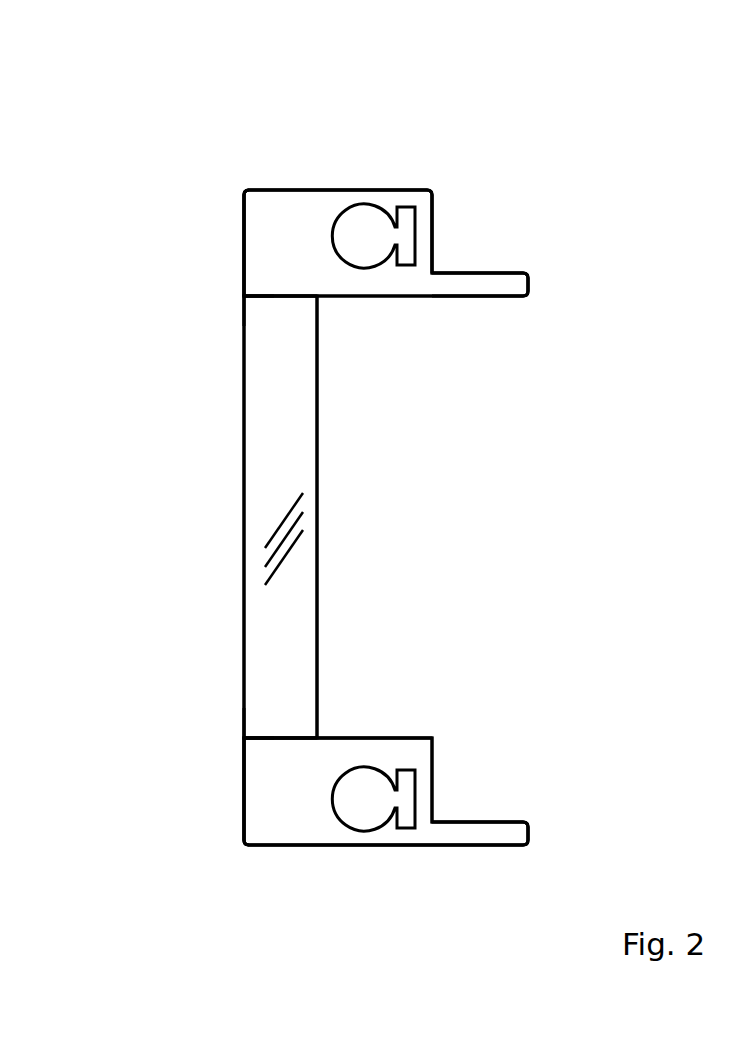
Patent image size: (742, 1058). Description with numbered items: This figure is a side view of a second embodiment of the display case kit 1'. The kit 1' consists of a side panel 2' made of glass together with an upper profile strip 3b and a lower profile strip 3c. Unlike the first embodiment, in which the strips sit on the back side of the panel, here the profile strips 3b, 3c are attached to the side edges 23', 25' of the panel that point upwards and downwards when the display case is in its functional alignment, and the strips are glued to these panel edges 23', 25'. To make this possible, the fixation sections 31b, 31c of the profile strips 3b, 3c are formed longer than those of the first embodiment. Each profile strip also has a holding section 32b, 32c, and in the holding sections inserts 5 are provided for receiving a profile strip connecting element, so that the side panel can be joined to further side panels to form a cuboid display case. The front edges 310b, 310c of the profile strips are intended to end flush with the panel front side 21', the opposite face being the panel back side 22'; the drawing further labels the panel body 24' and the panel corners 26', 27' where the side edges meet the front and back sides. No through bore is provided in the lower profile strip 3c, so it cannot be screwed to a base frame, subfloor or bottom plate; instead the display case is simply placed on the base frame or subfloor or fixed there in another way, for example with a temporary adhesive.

The display case kit 1' is at (317, 456).
The pane 2' is at (223, 517).
The first pane surface 21' is at (172, 517).
The second pane surface 22' is at (423, 517).
The side edge 23' is at (353, 338).
The pane body 24' is at (388, 579).
The side edge 25' is at (206, 702).
The upper pane corner 26' is at (195, 279).
The lower pane corner 27' is at (193, 767).
The profile strip 3b is at (433, 205).
The profile strip 3c is at (433, 762).
The fixation section 31b is at (272, 217).
The fixation section 31c is at (267, 813).
The flange of upper profile 32b is at (488, 282).
The flange of lower profile 32c is at (483, 832).
The outer surface of upper profile 310b is at (243, 242).
The outer surface of lower profile 310c is at (243, 802).
The insert 5 is at (359, 228).